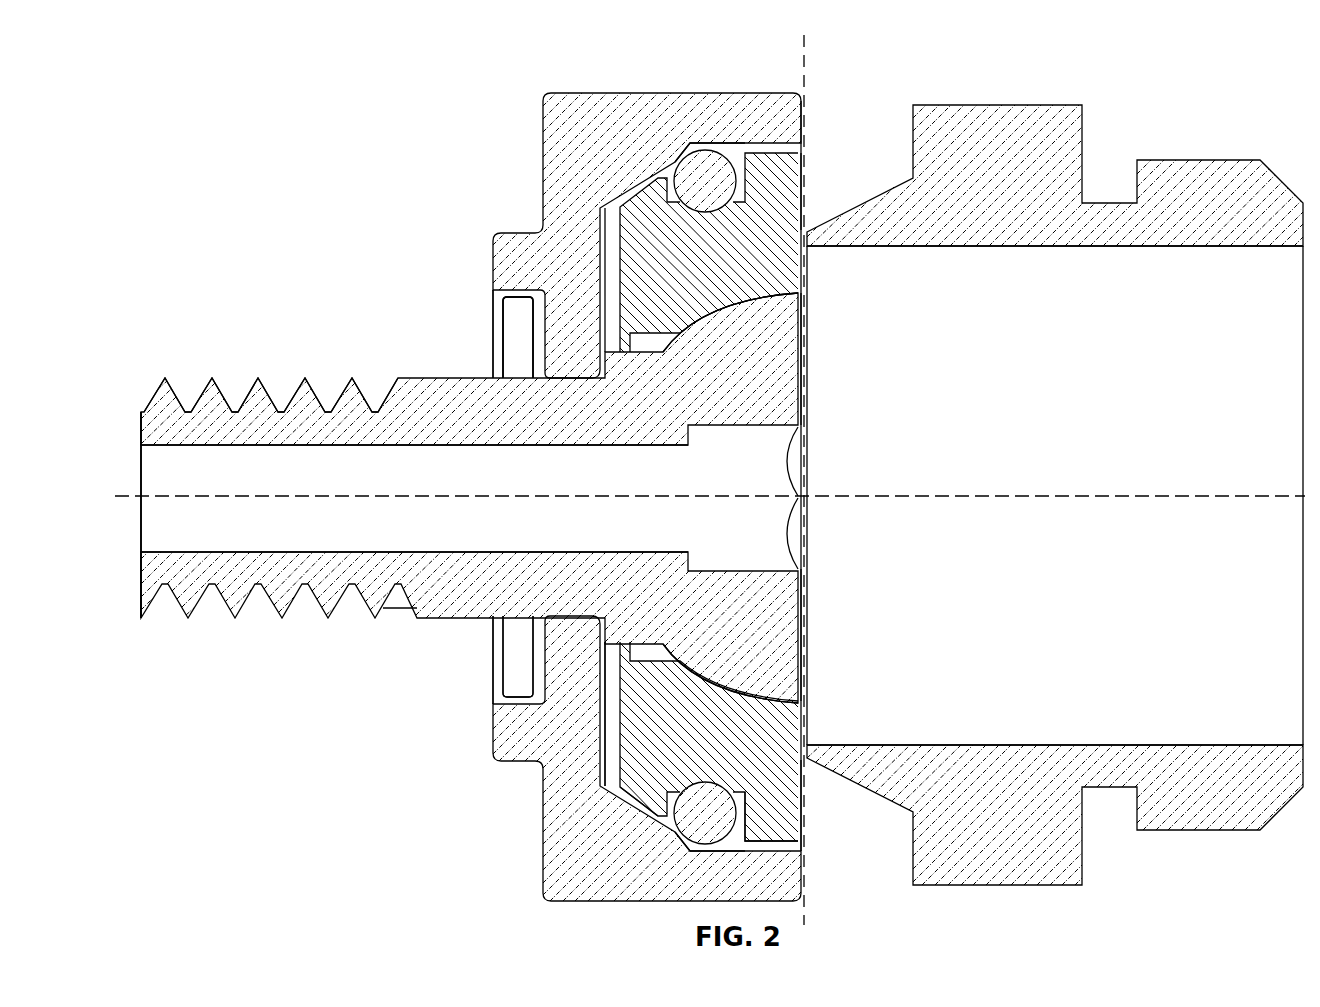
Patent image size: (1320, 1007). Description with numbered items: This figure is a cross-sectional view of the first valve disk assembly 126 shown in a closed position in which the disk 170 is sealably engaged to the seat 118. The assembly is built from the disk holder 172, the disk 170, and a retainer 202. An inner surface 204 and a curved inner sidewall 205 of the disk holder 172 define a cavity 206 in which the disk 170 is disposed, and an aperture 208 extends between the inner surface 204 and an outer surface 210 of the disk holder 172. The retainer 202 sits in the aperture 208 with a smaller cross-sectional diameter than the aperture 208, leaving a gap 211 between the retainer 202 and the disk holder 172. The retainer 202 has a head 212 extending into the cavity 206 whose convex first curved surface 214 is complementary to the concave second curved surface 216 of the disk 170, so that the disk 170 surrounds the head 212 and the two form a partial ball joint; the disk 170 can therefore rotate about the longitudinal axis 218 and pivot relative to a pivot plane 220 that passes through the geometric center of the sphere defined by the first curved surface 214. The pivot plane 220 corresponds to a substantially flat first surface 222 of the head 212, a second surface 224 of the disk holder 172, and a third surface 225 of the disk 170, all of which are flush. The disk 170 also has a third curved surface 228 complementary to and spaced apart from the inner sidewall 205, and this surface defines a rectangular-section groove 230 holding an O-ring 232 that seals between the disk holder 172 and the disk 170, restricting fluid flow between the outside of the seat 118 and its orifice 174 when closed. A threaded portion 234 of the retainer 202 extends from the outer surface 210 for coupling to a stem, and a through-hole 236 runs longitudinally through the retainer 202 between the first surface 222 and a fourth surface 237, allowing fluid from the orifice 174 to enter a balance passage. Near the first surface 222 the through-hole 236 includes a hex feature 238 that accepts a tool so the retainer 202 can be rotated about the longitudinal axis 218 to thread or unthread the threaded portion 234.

The seat 118 is at (1000, 105).
The first valve disk assembly 126 is at (281, 139).
The disk 170 is at (617, 215).
The disk holder 172 is at (677, 92).
The orifice 174 is at (1048, 457).
The retainer 202 is at (457, 377).
The inner surface 204 is at (602, 725).
The inner sidewall 205 is at (630, 807).
The cavity 206 is at (840, 810).
The aperture 208 is at (464, 340).
The outer surface 210 is at (543, 680).
The gap 211 is at (530, 363).
The head 212 is at (808, 634).
The first curved surface 214 is at (773, 697).
The second curved surface 216 is at (702, 661).
The longitudinal axis 218 is at (1122, 492).
The pivot plane 220 is at (804, 71).
The first surface 222 is at (805, 388).
The second surface 224 is at (804, 125).
The third surface 225 is at (804, 193).
The third curved surface 228 is at (762, 843).
The groove 230 is at (672, 208).
The O-ring 232 is at (681, 152).
The threaded portion 234 is at (303, 388).
The through-hole 236 is at (383, 485).
The fourth surface 237 is at (141, 416).
The hex feature 238 is at (740, 422).